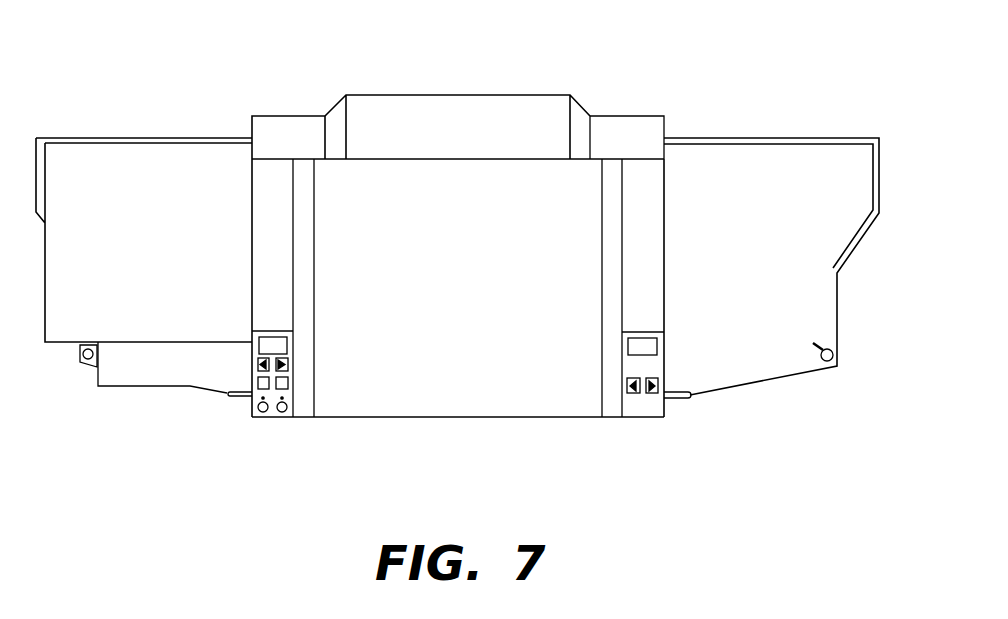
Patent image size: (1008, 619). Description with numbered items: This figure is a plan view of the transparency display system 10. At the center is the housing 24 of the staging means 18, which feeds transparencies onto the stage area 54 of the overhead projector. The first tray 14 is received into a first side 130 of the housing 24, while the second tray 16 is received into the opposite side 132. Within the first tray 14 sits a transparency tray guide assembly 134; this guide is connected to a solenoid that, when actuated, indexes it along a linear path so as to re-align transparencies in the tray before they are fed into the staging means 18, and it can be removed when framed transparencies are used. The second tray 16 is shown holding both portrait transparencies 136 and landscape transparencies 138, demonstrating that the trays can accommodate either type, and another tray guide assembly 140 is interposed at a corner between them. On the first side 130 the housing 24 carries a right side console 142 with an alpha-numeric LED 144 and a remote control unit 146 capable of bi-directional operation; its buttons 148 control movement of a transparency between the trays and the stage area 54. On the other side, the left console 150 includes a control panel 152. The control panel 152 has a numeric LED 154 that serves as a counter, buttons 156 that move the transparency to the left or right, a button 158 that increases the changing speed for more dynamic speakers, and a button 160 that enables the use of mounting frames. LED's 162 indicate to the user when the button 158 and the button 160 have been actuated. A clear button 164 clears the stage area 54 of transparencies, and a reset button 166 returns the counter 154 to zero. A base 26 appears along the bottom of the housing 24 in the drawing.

The transparency display system 10 is at (407, 35).
The first tray 14 is at (747, 138).
The second tray 16 is at (182, 137).
The staging means 18 is at (517, 118).
The housing 24 is at (283, 138).
The base 26 is at (640, 419).
The stage area 54 is at (485, 255).
The first side 130 is at (667, 288).
The opposite side 132 is at (250, 203).
The transparency tray guide assembly 134 is at (835, 340).
The portrait transparencies 136 is at (89, 153).
The landscape transparencies 138 is at (115, 377).
The tray guide assembly 140 is at (78, 355).
The right side console 142 is at (652, 207).
The alpha-numeric LED 144 is at (628, 338).
The remote control unit 146 is at (632, 368).
The buttons 148 is at (660, 379).
The left console 150 is at (277, 280).
The control panel 152 is at (290, 335).
The numeric LED 154 is at (248, 330).
The buttons 156 is at (290, 362).
The button 158 is at (257, 383).
The button 160 is at (290, 378).
The LED's 162 is at (253, 403).
The clear button 164 is at (262, 417).
The reset button 166 is at (287, 417).